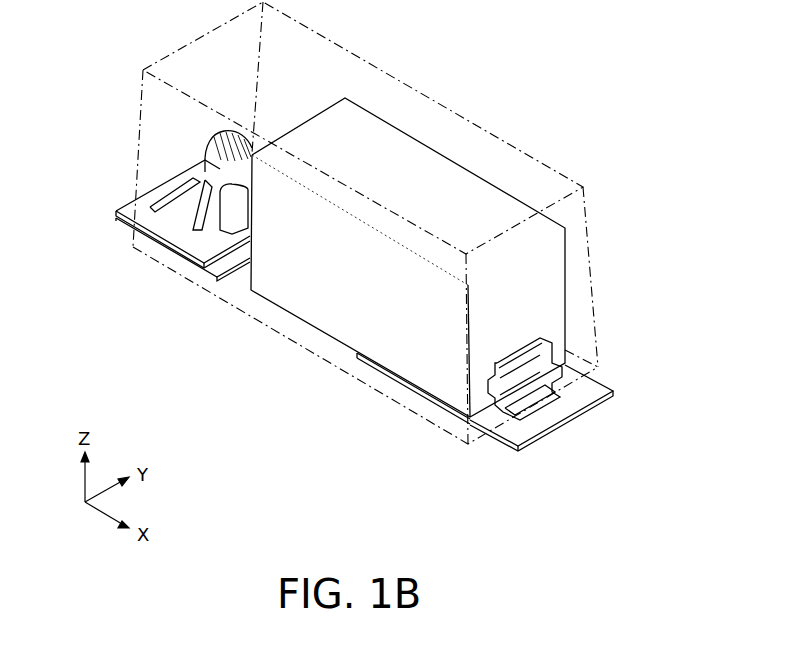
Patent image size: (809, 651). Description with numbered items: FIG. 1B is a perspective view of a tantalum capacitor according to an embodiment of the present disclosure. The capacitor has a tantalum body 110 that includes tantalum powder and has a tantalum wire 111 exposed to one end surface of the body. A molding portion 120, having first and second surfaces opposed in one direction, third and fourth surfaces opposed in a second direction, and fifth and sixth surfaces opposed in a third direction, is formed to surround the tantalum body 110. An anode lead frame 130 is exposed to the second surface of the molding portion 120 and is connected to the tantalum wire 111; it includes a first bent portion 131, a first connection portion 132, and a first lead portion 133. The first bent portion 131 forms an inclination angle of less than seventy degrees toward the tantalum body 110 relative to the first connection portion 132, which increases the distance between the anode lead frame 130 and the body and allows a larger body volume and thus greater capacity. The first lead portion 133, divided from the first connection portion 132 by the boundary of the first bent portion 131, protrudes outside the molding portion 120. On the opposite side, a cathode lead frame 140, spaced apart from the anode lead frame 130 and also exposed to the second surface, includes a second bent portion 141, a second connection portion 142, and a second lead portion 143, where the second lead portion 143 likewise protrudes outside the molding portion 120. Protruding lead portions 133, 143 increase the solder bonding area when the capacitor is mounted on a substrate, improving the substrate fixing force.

The tantalum body 110 is at (437, 175).
The tantalum wire 111 is at (207, 152).
The molding portion 120 is at (518, 147).
The anode lead frame 130 is at (140, 253).
The first bent portion 131 is at (185, 222).
The first connection portion 132 is at (173, 253).
The first lead portion 133 is at (116, 209).
The cathode lead frame 140 is at (515, 424).
The second bent portion 141 is at (582, 407).
The second connection portion 142 is at (455, 428).
The second lead portion 143 is at (530, 433).